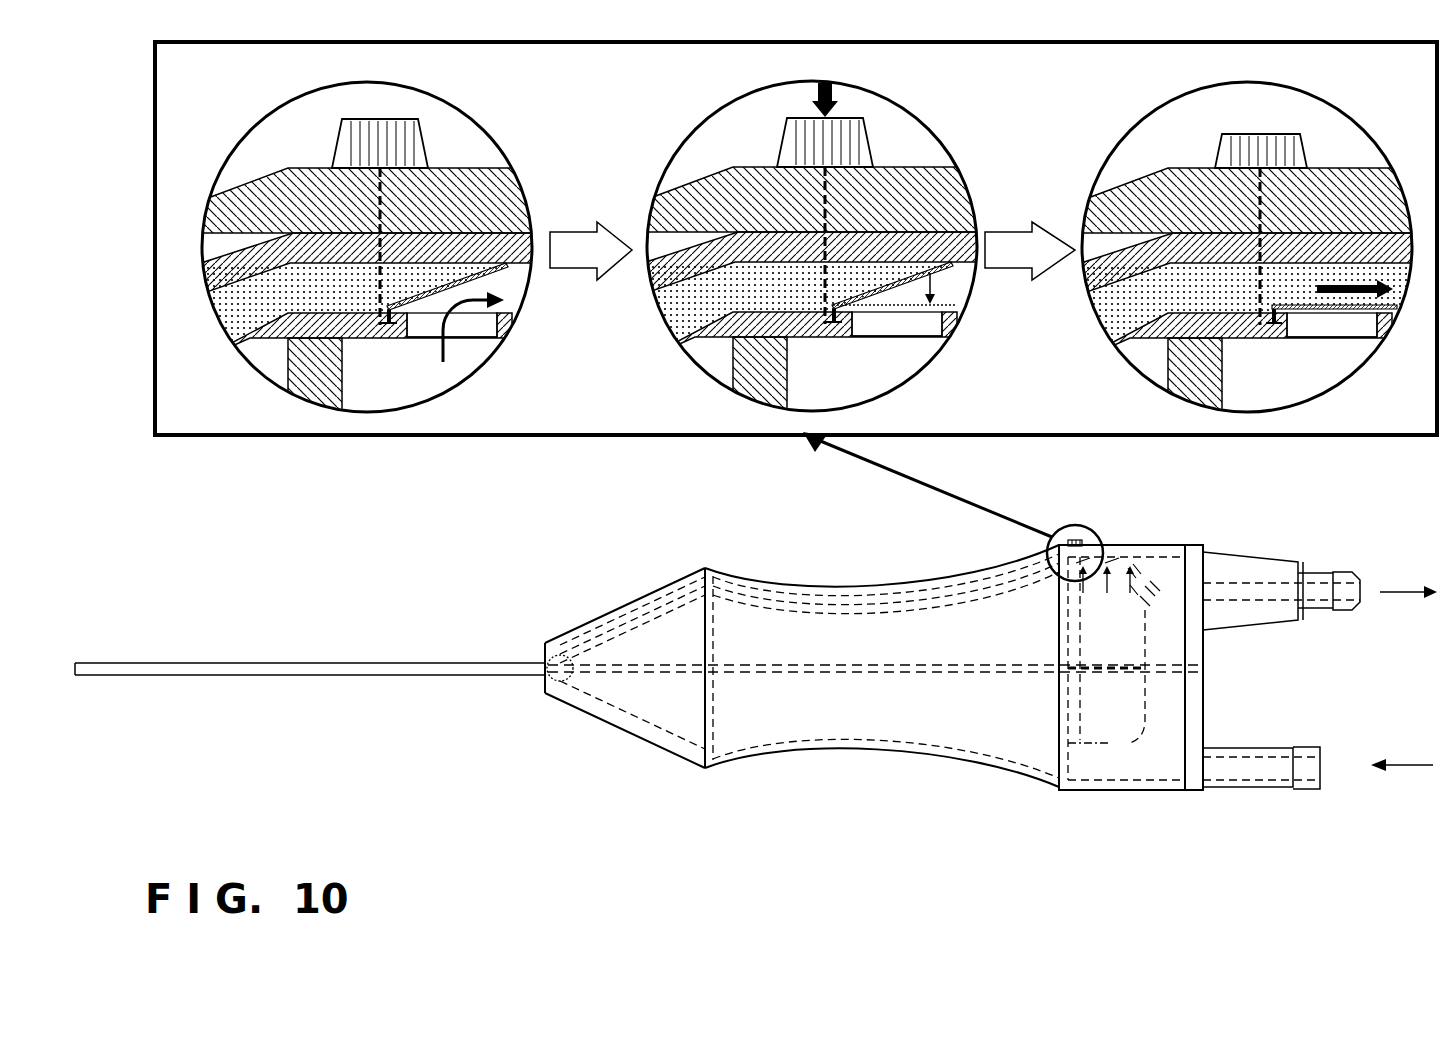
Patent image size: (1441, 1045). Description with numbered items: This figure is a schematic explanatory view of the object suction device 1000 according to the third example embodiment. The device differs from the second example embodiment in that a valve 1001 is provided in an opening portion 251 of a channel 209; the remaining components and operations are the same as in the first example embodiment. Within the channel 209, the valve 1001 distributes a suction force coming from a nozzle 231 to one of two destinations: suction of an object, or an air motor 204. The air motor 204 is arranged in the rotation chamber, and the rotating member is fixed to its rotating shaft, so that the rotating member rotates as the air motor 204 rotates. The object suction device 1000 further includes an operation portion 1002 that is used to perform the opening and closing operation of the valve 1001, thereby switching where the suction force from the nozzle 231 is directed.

The object suction device 1000 is at (845, 790).
The air motor 204 is at (1103, 733).
The nozzle 231 is at (1340, 572).
The channel 209 is at (257, 303).
The opening portion 251 is at (467, 330).
The valve 1001 is at (500, 270).
The operation portion 1002 is at (350, 150).